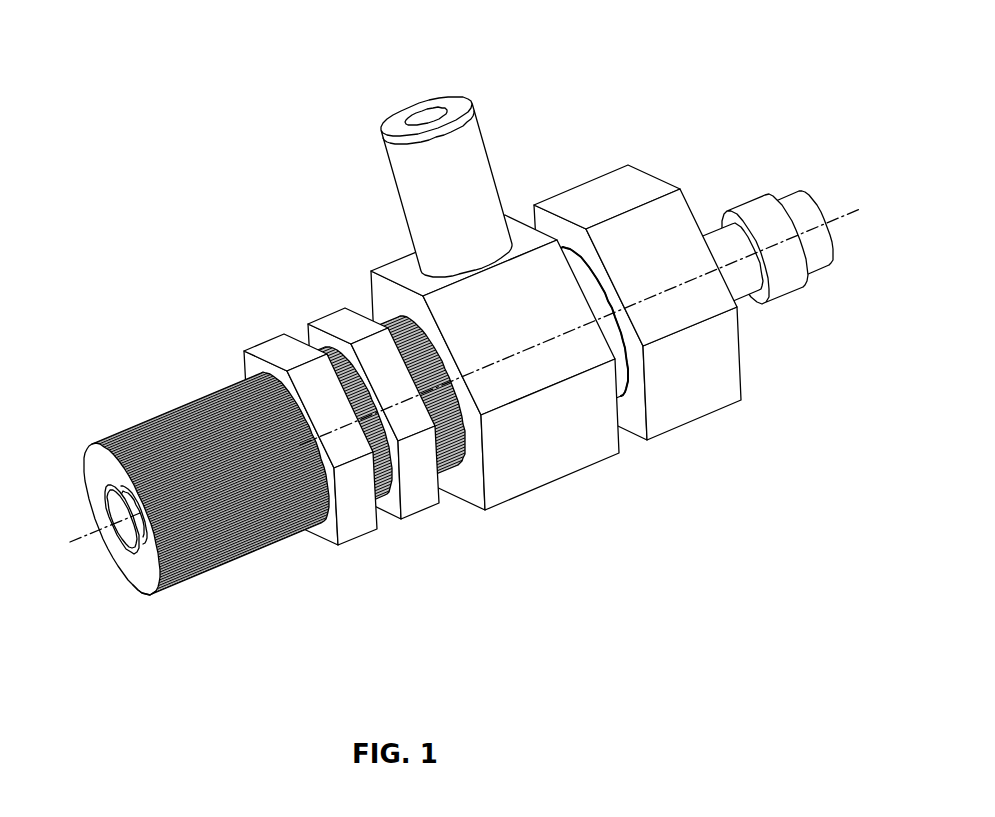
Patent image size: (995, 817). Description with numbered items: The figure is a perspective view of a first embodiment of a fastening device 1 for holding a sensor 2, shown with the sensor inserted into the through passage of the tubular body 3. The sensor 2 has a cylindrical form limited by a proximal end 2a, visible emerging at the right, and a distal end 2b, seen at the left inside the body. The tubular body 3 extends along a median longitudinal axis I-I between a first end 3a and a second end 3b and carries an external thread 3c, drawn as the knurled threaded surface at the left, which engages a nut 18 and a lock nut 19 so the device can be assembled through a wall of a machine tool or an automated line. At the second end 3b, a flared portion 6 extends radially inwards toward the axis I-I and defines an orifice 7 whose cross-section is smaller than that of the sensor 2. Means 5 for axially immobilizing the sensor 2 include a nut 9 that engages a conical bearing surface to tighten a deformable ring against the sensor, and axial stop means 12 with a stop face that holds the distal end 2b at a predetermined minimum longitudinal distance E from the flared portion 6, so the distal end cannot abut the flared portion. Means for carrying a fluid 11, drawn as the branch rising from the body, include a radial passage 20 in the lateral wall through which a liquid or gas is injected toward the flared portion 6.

The fastening device 1 is at (449, 338).
The sensor 2 is at (757, 191).
The proximal end 2a is at (808, 212).
The distal end 2b is at (131, 548).
The tubular body 3 is at (184, 483).
The first end 3a is at (702, 208).
The second end 3b is at (91, 455).
The external thread 3c is at (167, 410).
The means for axially immobilizing the sensor 5 is at (581, 180).
The flared portion 6 is at (153, 598).
The orifice 7 is at (104, 492).
The nut 9 is at (637, 281).
The means for carrying a fluid 11 is at (456, 150).
The axial stop means 12 is at (119, 531).
The nut 18 is at (275, 343).
The lock nut 19 is at (342, 318).
The radial passage 20 is at (430, 108).
The predetermined minimum longitudinal distance E is at (110, 512).
The median longitudinal axis I is at (465, 377).